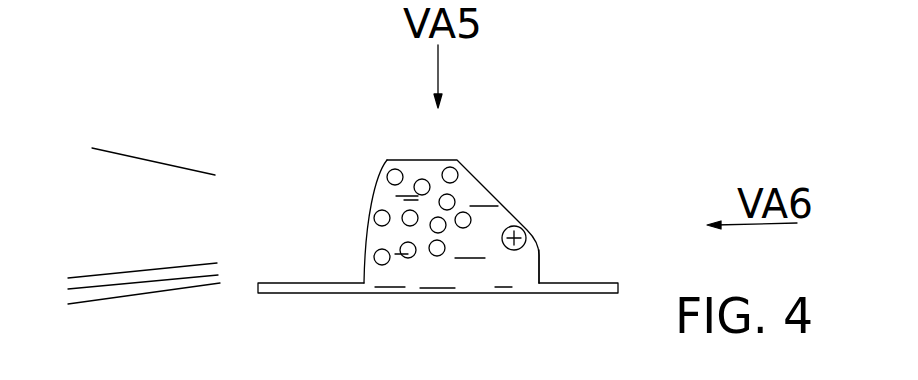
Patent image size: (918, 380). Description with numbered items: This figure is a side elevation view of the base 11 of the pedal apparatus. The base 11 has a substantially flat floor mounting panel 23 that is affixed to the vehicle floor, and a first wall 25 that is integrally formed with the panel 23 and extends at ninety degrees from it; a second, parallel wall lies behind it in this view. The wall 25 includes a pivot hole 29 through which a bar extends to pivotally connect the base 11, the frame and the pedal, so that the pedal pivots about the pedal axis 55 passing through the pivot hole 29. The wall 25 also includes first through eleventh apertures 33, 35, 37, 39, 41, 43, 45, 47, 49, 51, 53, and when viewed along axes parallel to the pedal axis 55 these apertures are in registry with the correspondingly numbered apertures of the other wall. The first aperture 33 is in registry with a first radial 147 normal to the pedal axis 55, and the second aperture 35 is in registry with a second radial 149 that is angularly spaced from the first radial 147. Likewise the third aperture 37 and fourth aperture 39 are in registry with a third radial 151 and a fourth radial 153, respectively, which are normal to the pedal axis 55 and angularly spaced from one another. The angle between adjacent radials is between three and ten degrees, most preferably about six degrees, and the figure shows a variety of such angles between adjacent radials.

The base 11 is at (580, 202).
The floor mounting panel 23 is at (283, 295).
The first wall 25 is at (540, 265).
The pivot hole 29 is at (523, 228).
The pedal axis 55 is at (527, 233).
The first aperture 33 is at (374, 256).
The second aperture 35 is at (404, 258).
The third aperture 37 is at (434, 256).
The fourth aperture 39 is at (374, 217).
The fifth aperture 41 is at (403, 213).
The sixth aperture 43 is at (442, 232).
The seventh aperture 45 is at (389, 171).
The eighth aperture 47 is at (420, 179).
The ninth aperture 49 is at (453, 196).
The tenth aperture 51 is at (468, 227).
The eleventh aperture 53 is at (453, 168).
The first radial 147 is at (128, 296).
The second radial 149 is at (77, 288).
The third radial 151 is at (167, 268).
The fourth radial 153 is at (157, 160).